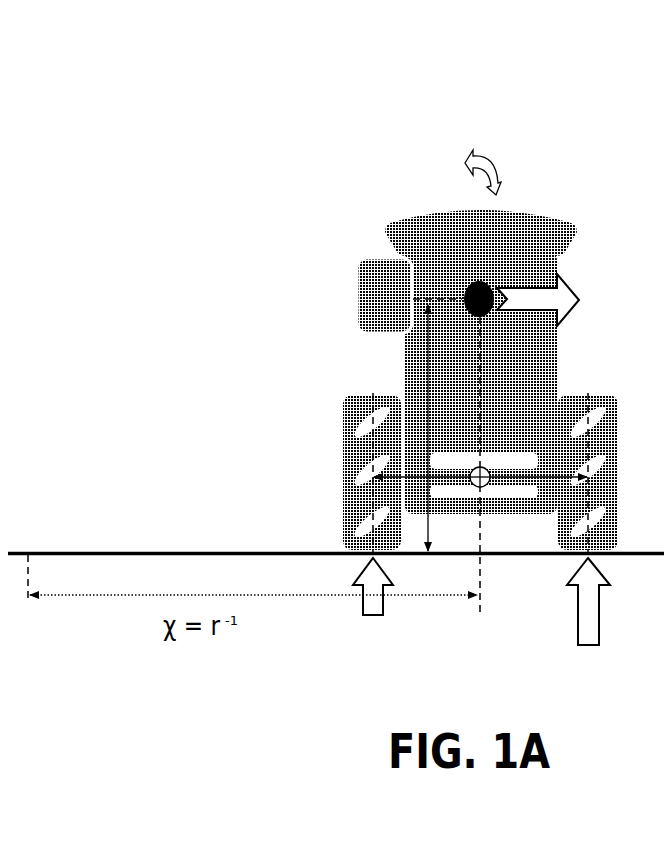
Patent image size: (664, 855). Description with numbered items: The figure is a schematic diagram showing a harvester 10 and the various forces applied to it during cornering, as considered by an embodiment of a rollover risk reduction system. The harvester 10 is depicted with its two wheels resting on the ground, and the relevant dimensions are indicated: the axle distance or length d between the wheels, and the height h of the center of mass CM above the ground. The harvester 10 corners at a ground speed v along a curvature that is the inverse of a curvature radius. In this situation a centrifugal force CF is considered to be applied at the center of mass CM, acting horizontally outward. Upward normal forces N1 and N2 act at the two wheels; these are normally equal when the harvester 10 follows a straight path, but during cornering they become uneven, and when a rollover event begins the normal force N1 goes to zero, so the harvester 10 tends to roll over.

The harvester 10 is at (312, 222).
The center of mass CM is at (478, 276).
The centrifugal force CF is at (553, 300).
The height of center of mass h is at (418, 428).
The axle distance d is at (480, 466).
The normal force N1 is at (389, 599).
The normal force N2 is at (606, 601).
The ground speed v is at (483, 162).